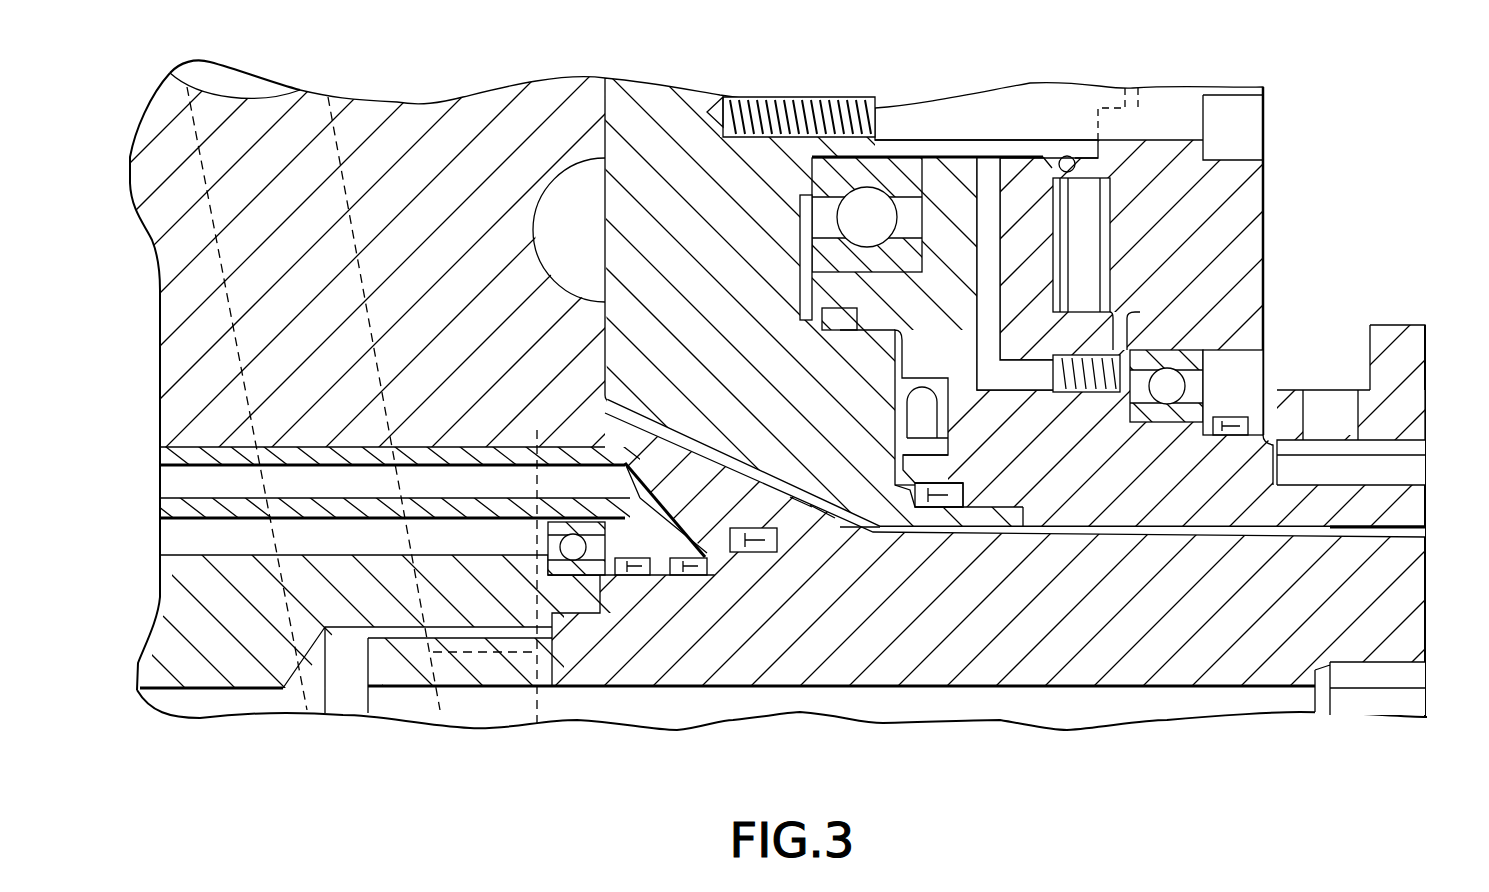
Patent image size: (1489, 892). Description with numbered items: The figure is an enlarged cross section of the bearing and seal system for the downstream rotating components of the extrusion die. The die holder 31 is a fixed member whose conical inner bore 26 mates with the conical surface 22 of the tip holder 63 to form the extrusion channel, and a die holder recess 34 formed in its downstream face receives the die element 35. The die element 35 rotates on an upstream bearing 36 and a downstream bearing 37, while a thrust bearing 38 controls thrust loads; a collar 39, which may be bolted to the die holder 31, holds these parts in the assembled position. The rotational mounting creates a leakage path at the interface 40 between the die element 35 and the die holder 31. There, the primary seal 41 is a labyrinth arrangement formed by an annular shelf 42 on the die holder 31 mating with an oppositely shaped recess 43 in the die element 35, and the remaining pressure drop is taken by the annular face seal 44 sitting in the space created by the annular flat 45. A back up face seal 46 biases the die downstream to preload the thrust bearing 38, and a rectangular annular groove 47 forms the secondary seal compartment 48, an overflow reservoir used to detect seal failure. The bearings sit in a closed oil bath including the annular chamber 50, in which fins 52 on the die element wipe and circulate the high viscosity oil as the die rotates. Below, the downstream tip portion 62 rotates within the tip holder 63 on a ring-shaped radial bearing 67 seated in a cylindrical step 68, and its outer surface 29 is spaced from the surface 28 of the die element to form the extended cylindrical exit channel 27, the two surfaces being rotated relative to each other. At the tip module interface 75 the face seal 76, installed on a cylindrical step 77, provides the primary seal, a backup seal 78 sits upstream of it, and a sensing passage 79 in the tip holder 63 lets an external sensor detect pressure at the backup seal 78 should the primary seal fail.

The conical surface 22 is at (720, 478).
The bore 26 is at (823, 520).
The exit channel 27 is at (1385, 527).
The surface 28 is at (1235, 537).
The outer surface 29 is at (1310, 533).
The die holder 31 is at (678, 170).
The die holder recess 34 is at (1070, 155).
The die element 35 is at (1127, 478).
The upstream bearing 36 is at (860, 213).
The downstream bearing 37 is at (1190, 335).
The thrust bearing 38 is at (1085, 217).
The collar 39 is at (1190, 250).
The interface 40 is at (1030, 505).
The primary seal 41 is at (1135, 410).
The annular shelf 42 is at (975, 513).
The recess 43 is at (1003, 520).
The annular face seal 44 is at (928, 497).
The annular flat 45 is at (950, 490).
The back up face seal 46 is at (900, 427).
The annular groove 47 is at (947, 417).
The secondary seal compartment 48 is at (903, 390).
The annular chamber 50 is at (933, 170).
The fins 52 is at (998, 178).
The downstream tip portion 62 is at (1083, 612).
The tip holder 63 is at (698, 490).
The radial bearing 67 is at (983, 222).
The cylindrical step 68 is at (638, 562).
The interface 75 is at (850, 525).
The face seal 76 is at (753, 555).
The cylindrical step 77 is at (805, 500).
The backup seal 78 is at (687, 567).
The sensing passage 79 is at (448, 575).